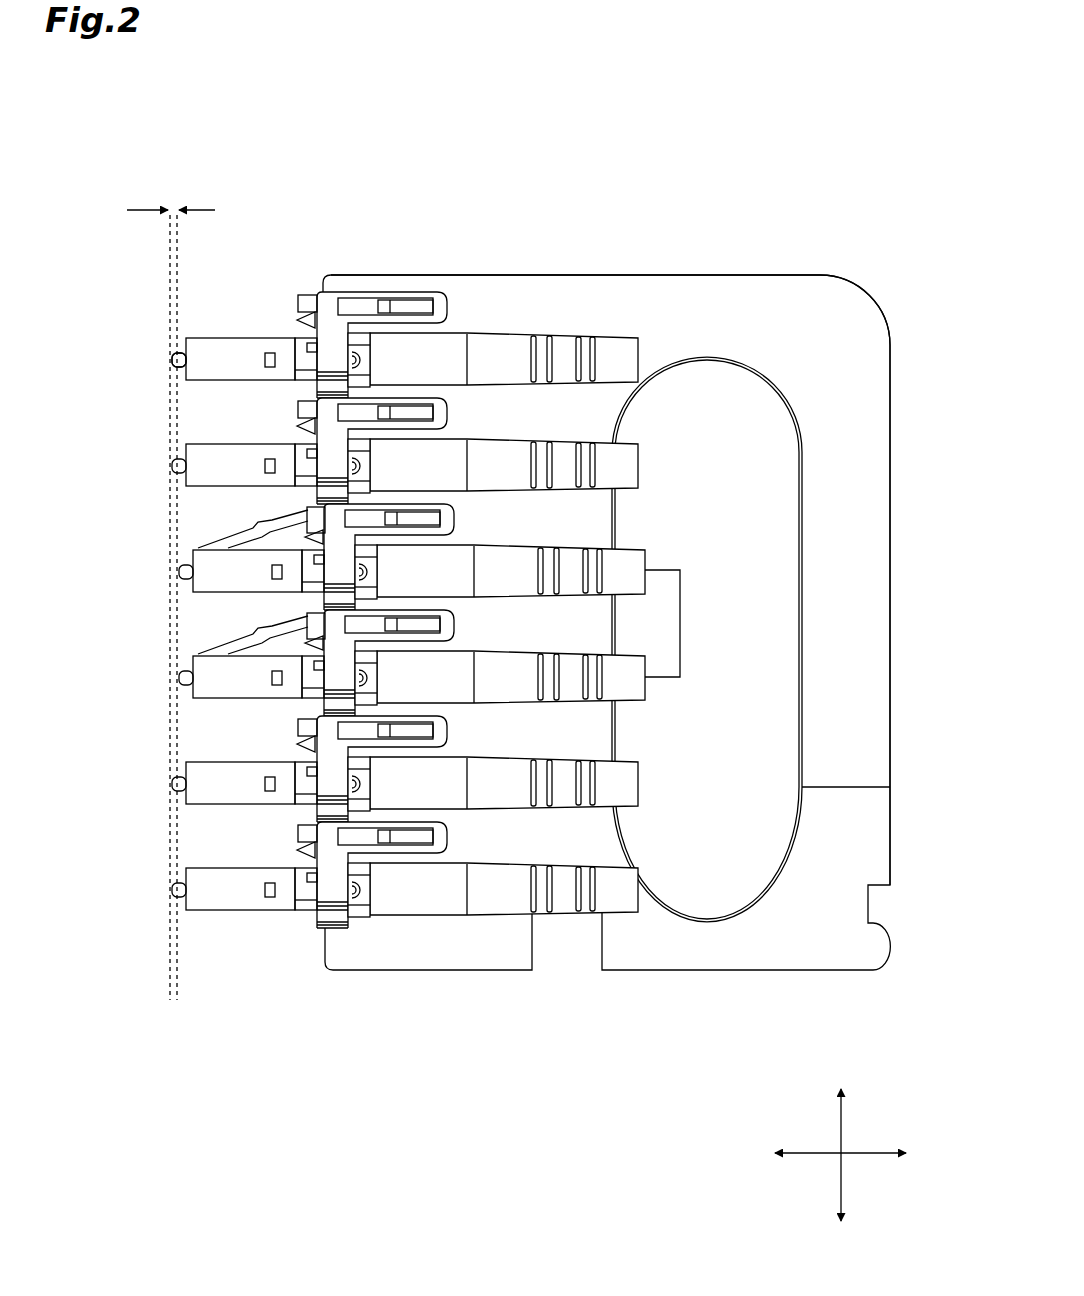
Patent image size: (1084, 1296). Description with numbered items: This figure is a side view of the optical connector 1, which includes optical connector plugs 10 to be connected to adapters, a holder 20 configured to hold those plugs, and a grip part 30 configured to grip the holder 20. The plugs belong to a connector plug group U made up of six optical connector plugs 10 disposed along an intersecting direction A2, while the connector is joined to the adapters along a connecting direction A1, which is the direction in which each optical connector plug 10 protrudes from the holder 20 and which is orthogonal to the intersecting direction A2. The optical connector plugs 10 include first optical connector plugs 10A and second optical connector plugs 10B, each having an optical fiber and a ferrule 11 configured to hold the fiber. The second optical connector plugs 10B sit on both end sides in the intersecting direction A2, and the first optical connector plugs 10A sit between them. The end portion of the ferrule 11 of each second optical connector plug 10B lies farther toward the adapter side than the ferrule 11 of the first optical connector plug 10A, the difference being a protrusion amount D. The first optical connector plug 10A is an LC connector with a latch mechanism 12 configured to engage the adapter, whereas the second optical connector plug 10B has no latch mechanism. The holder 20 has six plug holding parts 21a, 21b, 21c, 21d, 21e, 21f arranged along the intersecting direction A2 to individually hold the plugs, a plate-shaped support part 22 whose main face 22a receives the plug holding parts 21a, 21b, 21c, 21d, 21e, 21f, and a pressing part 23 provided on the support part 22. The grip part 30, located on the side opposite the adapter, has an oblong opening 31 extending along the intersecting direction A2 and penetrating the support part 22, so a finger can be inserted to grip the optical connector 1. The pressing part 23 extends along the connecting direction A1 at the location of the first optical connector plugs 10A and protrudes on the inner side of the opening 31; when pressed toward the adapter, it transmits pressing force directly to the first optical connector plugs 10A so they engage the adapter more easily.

The optical connector 1 is at (764, 168).
The optical connector plug 10 is at (215, 335).
The first optical connector plug 10A is at (200, 546).
The second optical connector plug 10B is at (341, 340).
The ferrule 11 is at (173, 360).
The latch mechanism 12 is at (238, 533).
The holder 20 is at (550, 256).
The plug holding part 21a is at (323, 302).
The plug holding part 21b is at (387, 405).
The plug holding part 21c is at (405, 520).
The plug holding part 21d is at (340, 645).
The plug holding part 21e is at (380, 733).
The plug holding part 21f is at (420, 846).
The support part 22 is at (640, 275).
The main face 22a is at (722, 298).
The pressing part 23 is at (668, 624).
The grip part 30 is at (862, 604).
The opening 31 is at (798, 428).
The protrusion amount D is at (172, 200).
The connector plug group U is at (254, 303).
The connecting direction A1 is at (812, 1154).
The intersecting direction A2 is at (843, 1130).